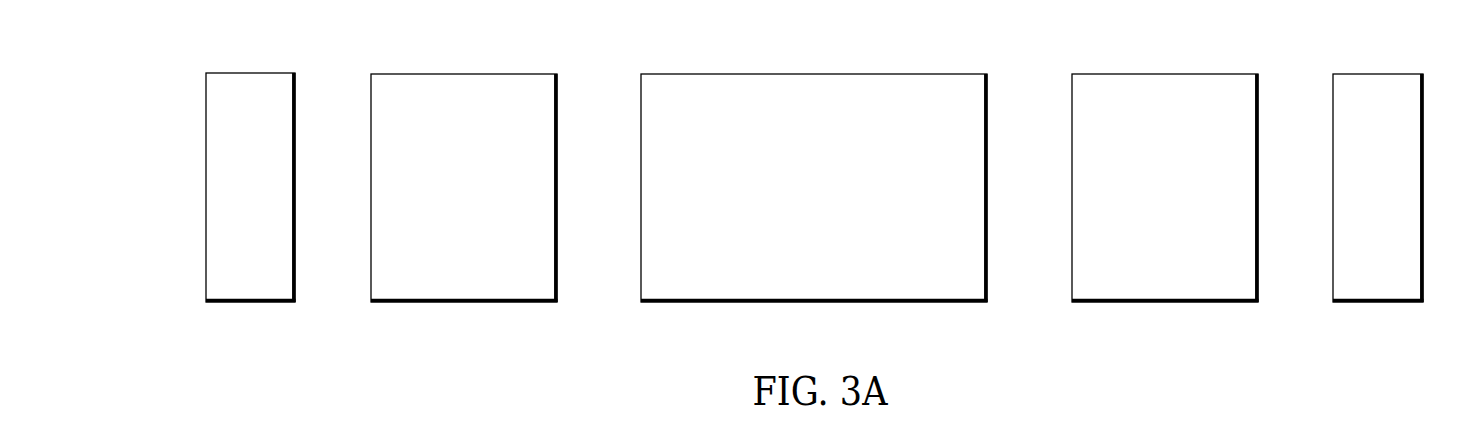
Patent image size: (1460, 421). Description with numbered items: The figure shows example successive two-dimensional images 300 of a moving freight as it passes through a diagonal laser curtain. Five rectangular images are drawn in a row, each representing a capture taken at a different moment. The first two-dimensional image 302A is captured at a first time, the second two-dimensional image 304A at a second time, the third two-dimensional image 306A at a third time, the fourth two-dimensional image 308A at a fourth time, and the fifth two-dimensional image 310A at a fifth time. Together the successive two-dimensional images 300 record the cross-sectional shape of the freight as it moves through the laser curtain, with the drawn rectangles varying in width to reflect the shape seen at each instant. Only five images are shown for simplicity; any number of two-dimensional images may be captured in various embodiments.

The successive two-dimensional images 300 is at (194, 42).
The first two-dimensional image 302A is at (250, 303).
The second two-dimensional image 304A is at (465, 303).
The third two-dimensional image 306A is at (815, 303).
The fourth two-dimensional image 308A is at (1163, 303).
The fifth two-dimensional image 310A is at (1380, 303).